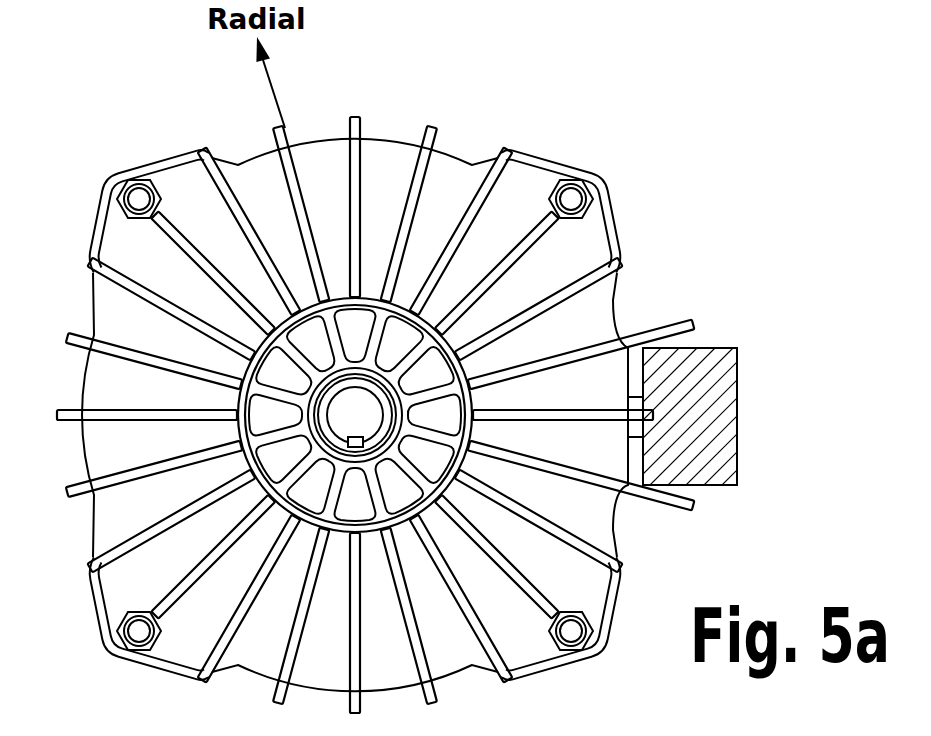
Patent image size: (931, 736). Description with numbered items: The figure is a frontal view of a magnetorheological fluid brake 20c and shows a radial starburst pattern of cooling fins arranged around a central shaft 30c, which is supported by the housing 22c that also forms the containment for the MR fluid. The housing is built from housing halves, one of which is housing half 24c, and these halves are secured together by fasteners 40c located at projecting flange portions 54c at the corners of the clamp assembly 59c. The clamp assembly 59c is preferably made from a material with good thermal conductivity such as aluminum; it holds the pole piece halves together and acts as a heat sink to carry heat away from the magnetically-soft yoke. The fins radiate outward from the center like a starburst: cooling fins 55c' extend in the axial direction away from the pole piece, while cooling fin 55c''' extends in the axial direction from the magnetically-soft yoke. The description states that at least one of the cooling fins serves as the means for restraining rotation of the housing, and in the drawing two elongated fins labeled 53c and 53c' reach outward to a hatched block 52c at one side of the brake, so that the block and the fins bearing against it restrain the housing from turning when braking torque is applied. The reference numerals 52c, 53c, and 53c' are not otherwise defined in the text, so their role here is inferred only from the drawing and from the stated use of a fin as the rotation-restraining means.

The magnetorheological fluid brake 20c is at (90, 523).
The housing 22c is at (400, 520).
The housing half 24c is at (560, 712).
The shaft 30c is at (378, 428).
The fastener 40c is at (597, 636).
The mounting block 52c is at (716, 430).
The extended fin 53c is at (613, 338).
The extended fin 53c' is at (597, 516).
The projecting flange portion 54c is at (575, 167).
The cooling fin 55c' is at (213, 198).
The cooling fin 55c''' is at (427, 187).
The clamp assembly 59c is at (246, 682).